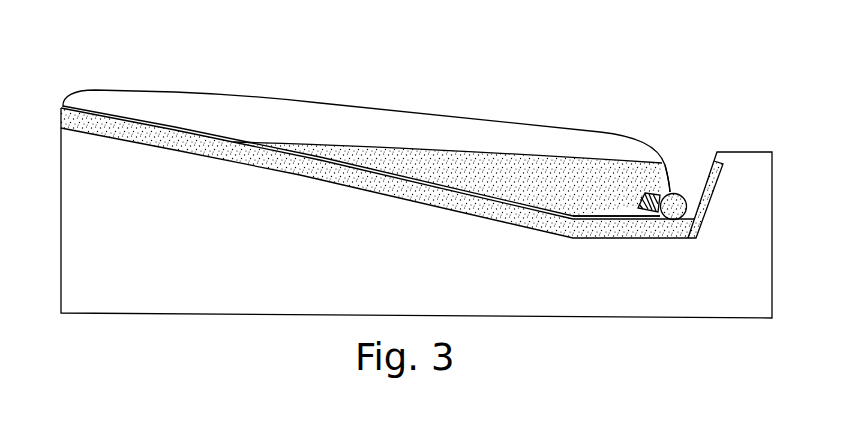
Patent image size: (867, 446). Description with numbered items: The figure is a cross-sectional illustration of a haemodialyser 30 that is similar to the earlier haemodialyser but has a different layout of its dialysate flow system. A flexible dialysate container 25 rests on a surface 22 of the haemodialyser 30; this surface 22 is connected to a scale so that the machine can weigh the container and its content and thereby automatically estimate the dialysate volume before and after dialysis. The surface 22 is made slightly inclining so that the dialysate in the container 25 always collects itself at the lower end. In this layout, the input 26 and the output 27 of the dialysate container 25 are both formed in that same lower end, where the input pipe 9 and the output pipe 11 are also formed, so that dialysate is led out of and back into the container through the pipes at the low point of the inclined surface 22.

The haemodialyser 30 is at (416, 213).
The surface 22 is at (187, 150).
The dialysate container 25 is at (377, 108).
The input 26 is at (647, 195).
The output 27 is at (670, 193).
The input pipe 9 is at (677, 213).
The output pipe 11 is at (655, 213).